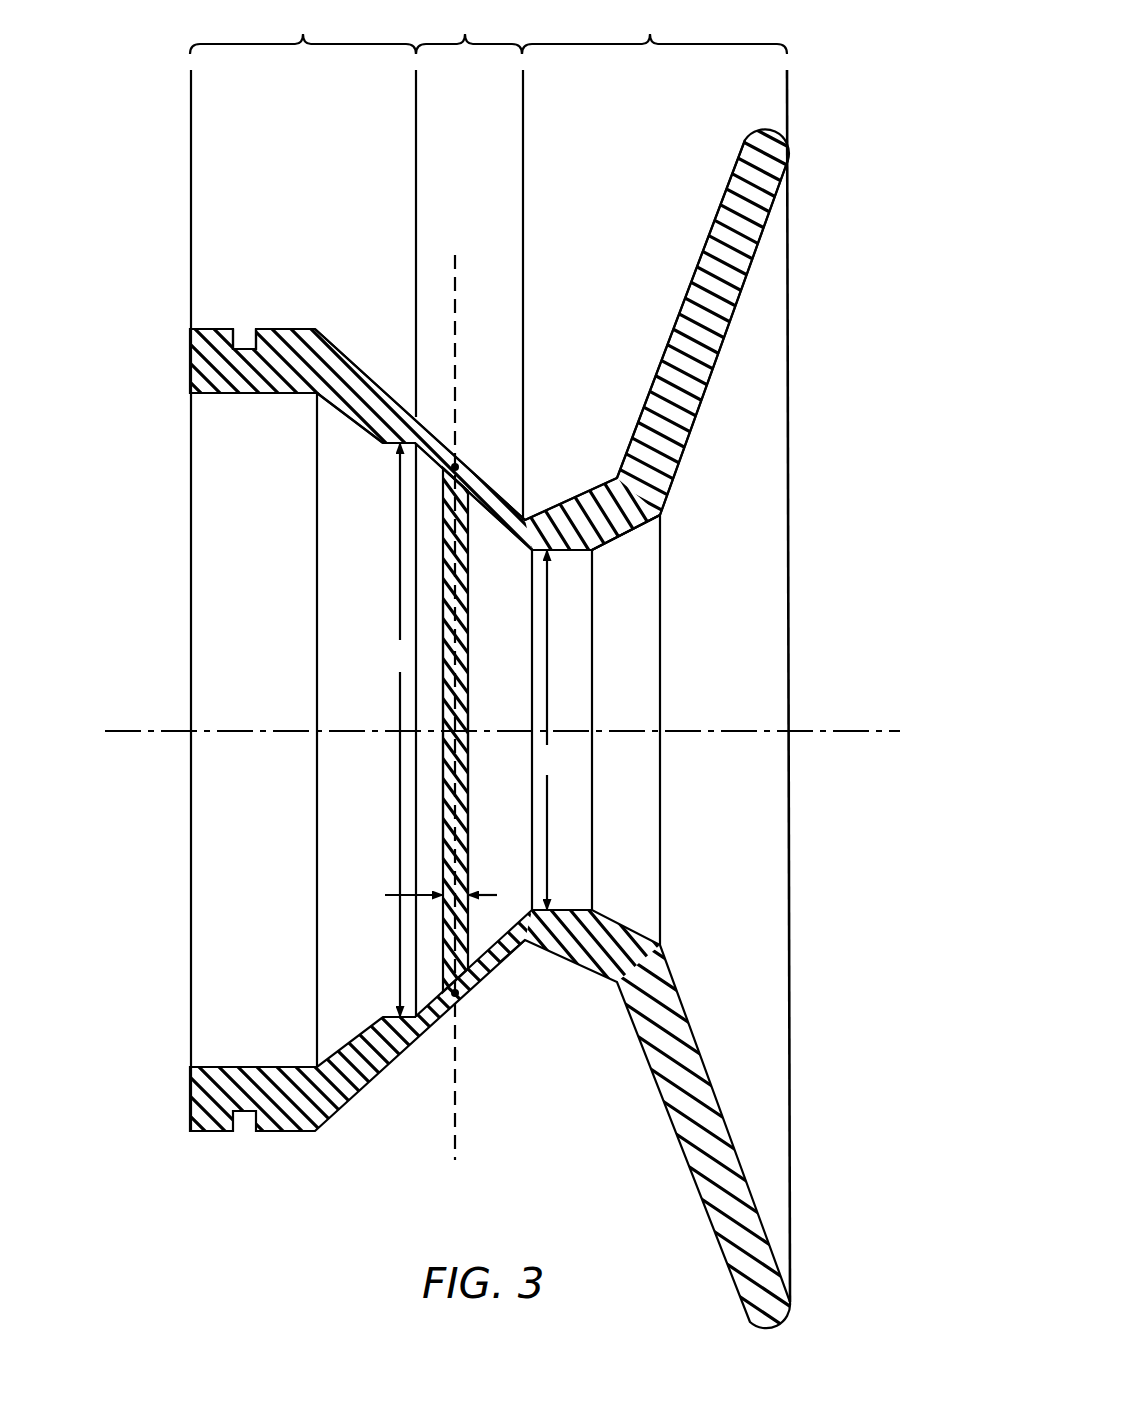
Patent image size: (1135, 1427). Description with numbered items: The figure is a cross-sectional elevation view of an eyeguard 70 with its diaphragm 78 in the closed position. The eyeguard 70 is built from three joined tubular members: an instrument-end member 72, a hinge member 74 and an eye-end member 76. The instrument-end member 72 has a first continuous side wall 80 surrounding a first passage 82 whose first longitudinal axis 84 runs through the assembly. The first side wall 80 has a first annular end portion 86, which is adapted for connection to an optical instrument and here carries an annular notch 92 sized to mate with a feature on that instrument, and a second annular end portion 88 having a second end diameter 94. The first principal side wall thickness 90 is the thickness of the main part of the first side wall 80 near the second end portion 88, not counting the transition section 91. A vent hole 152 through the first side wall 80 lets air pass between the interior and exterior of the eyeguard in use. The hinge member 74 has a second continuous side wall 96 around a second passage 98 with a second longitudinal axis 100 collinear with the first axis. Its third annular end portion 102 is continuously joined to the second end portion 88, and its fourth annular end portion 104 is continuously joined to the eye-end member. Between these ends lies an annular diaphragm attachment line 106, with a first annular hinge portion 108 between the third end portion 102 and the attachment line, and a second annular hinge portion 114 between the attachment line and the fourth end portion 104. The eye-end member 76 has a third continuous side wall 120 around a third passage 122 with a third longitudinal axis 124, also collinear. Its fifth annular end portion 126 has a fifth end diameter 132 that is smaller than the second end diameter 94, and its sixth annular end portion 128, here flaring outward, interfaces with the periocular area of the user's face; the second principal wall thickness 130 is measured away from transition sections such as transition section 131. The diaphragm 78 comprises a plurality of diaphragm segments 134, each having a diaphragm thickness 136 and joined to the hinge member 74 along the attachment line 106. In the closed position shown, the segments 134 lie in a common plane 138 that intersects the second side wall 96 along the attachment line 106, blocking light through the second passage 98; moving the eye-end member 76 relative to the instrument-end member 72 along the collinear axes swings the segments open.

The eyeguard 70 is at (142, 146).
The instrument-end member 72 is at (303, 568).
The hinge member 74 is at (469, 511).
The eye-end member 76 is at (656, 654).
The diaphragm 78 is at (485, 655).
The first continuous side wall 80 is at (283, 396).
The first passage 82 is at (226, 578).
The first longitudinal axis 84 is at (165, 729).
The first annular end portion 86 is at (286, 303).
The second annular end portion 88 is at (381, 381).
The first principal side wall thickness 90 is at (354, 433).
The transition section 91 is at (396, 428).
The annular notch 92 is at (247, 326).
The second end diameter 94 is at (399, 730).
The second continuous side wall 96 is at (464, 471).
The second passage 98 is at (521, 802).
The second longitudinal axis 100 is at (490, 726).
The third annular end portion 102 is at (442, 425).
The fourth annular end portion 104 is at (514, 491).
The annular diaphragm attachment line 106 is at (462, 466).
The first annular hinge portion 108 is at (425, 452).
The second annular hinge portion 114 is at (496, 522).
The third continuous side wall 120 is at (701, 416).
The third passage 122 is at (768, 701).
The third longitudinal axis 124 is at (745, 740).
The fifth annular end portion 126 is at (606, 479).
The sixth annular end portion 128 is at (673, 283).
The second principal wall thickness 130 is at (629, 538).
The transition section 131 is at (551, 540).
The fifth end diameter 132 is at (556, 730).
The diaphragm segment 134 is at (443, 683).
The diaphragm thickness 136 is at (420, 896).
The common plane 138 is at (457, 706).
The vent hole 152 is at (372, 1076).